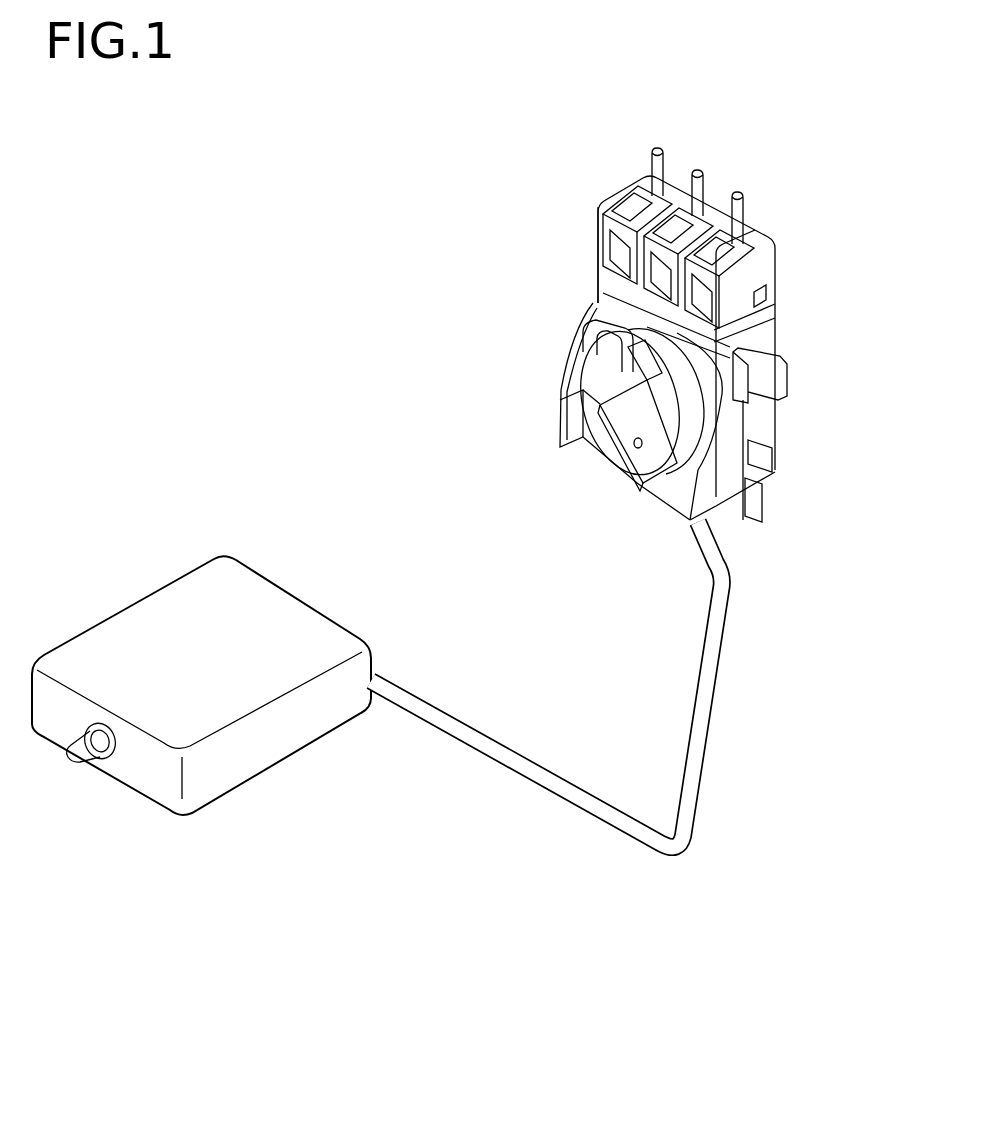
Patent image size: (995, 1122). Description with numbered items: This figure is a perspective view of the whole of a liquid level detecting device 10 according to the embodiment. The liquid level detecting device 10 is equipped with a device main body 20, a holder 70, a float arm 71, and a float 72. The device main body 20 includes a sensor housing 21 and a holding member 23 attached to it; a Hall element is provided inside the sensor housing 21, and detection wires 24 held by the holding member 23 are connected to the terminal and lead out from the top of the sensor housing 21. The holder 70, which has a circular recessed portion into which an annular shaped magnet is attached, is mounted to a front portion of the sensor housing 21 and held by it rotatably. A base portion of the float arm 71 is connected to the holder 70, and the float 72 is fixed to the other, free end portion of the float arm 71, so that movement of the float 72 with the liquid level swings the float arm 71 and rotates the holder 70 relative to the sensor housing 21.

The liquid level detecting device 10 is at (360, 191).
The device main body 20 is at (600, 168).
The sensor housing 21 is at (555, 352).
The holding member 23 is at (621, 268).
The detection wires 24 is at (663, 163).
The holder 70 is at (597, 435).
The float arm 71 is at (553, 797).
The float 72 is at (269, 740).